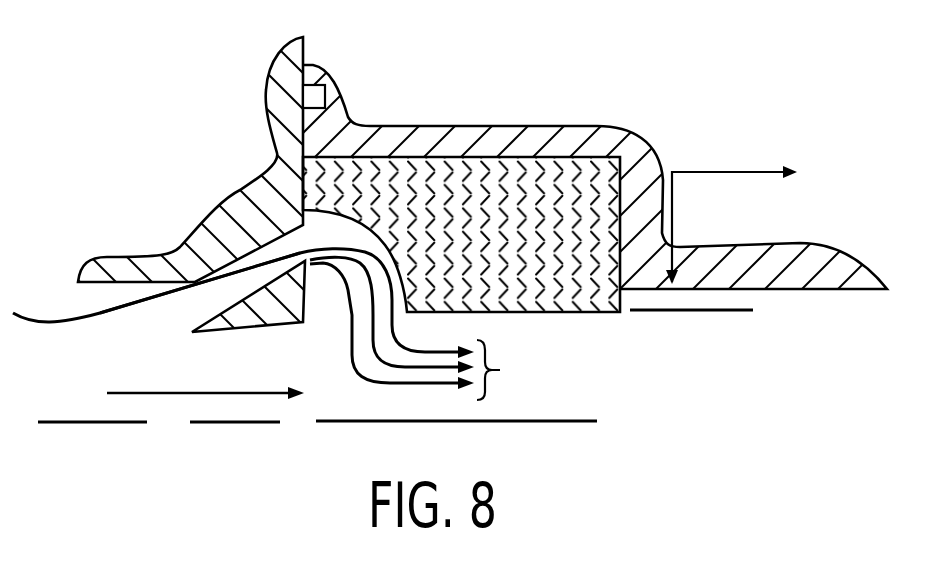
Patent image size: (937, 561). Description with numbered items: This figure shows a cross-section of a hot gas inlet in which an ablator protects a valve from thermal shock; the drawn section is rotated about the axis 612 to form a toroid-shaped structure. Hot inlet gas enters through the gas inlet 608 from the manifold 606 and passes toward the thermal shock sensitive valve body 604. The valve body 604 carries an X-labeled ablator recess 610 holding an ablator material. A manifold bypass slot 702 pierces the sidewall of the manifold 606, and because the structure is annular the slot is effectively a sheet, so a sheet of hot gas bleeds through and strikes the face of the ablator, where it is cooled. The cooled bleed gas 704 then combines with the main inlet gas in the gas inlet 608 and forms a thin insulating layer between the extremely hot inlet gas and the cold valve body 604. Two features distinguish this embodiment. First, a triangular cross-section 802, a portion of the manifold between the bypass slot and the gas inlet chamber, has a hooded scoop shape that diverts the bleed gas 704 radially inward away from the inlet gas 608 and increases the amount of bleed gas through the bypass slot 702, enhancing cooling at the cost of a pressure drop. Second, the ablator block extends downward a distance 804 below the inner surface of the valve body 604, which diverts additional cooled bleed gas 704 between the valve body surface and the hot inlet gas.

The valve body 604 is at (473, 130).
The manifold 606 is at (173, 257).
The gas inlet 608 is at (182, 397).
The ablator recess 610 is at (568, 183).
The axis 612 is at (53, 425).
The manifold bypass slot 702 is at (190, 313).
The cooled bleed gas 704 is at (32, 353).
The triangular cross-section 802 is at (277, 318).
The distance 804 is at (671, 318).